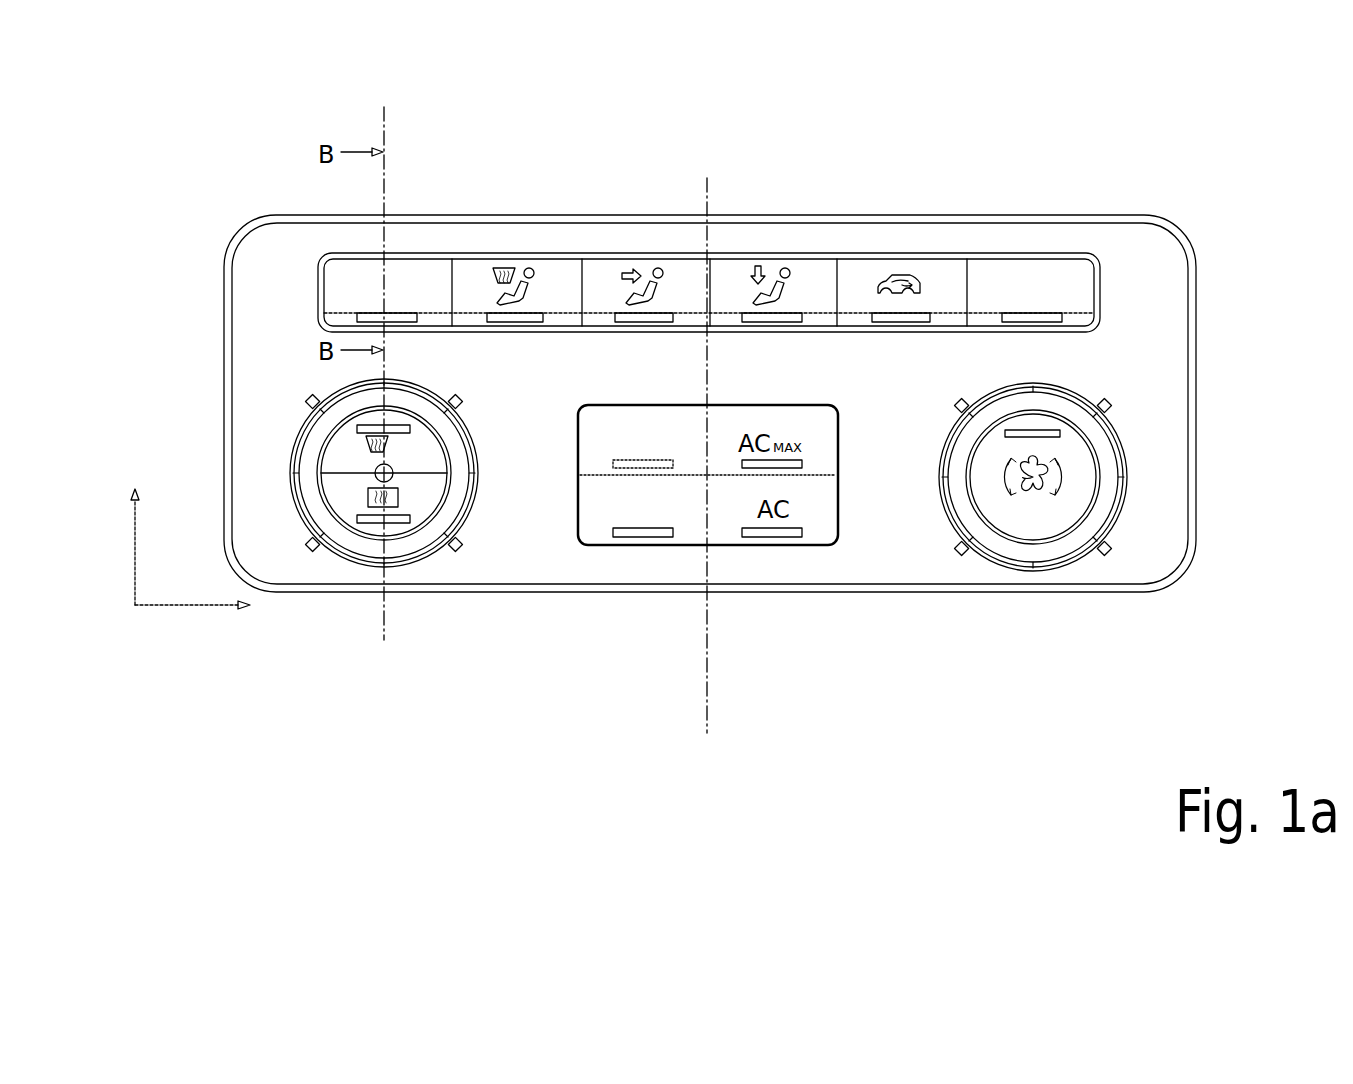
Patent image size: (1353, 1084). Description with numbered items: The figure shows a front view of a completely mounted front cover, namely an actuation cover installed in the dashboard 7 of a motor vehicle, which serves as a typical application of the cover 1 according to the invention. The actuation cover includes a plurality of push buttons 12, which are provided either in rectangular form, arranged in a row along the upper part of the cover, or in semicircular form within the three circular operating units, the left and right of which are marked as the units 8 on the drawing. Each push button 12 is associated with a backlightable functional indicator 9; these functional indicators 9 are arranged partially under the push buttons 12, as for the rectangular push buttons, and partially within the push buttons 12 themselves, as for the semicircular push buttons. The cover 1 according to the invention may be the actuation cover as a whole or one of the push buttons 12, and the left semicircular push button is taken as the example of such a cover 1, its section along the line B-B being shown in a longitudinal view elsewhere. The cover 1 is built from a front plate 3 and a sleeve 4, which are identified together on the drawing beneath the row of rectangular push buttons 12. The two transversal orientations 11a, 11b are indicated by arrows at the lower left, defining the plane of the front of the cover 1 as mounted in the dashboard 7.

The cover 1 is at (650, 610).
The front plate 3 is at (709, 318).
The sleeve 4 is at (709, 321).
The dashboard 7 is at (1193, 433).
The mold portion 8 is at (470, 505).
The functional indicator 9 is at (372, 426).
The transversal orientation 11a is at (108, 546).
The transversal orientation 11b is at (196, 623).
The push button 12 is at (691, 270).